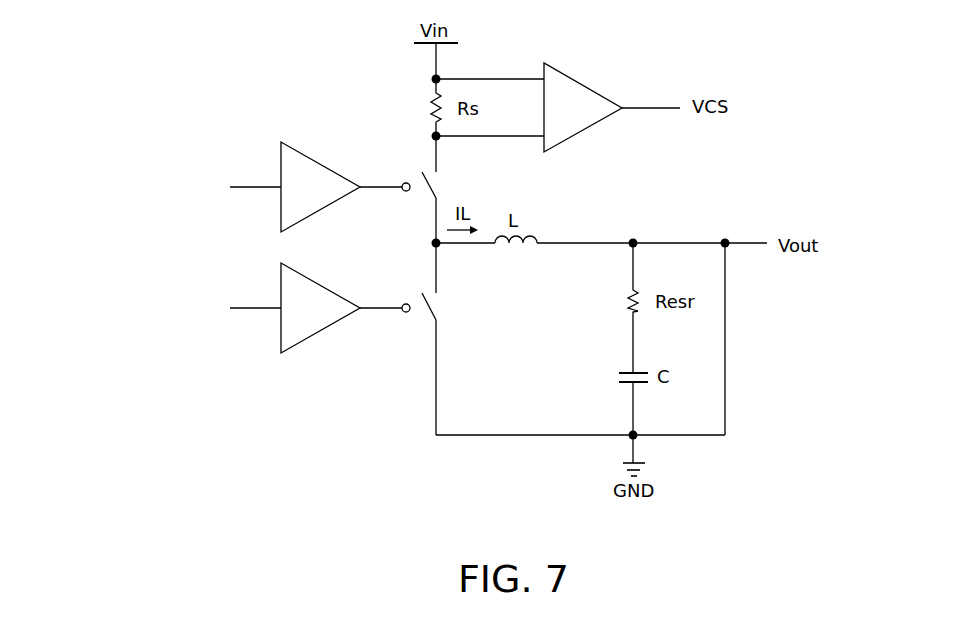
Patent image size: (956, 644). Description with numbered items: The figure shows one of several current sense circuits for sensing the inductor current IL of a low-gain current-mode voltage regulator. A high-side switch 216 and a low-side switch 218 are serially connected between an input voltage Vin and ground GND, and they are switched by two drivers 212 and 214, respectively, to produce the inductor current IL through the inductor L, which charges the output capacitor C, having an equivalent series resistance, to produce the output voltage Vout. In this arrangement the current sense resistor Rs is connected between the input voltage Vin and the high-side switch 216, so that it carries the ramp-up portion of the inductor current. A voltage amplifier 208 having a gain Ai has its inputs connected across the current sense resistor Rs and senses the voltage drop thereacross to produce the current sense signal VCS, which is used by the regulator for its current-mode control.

The voltage amplifier 208 is at (583, 80).
The driver 212 is at (320, 160).
The driver 214 is at (322, 335).
The high-side transistor 216 is at (415, 161).
The low-side transistor 218 is at (448, 314).